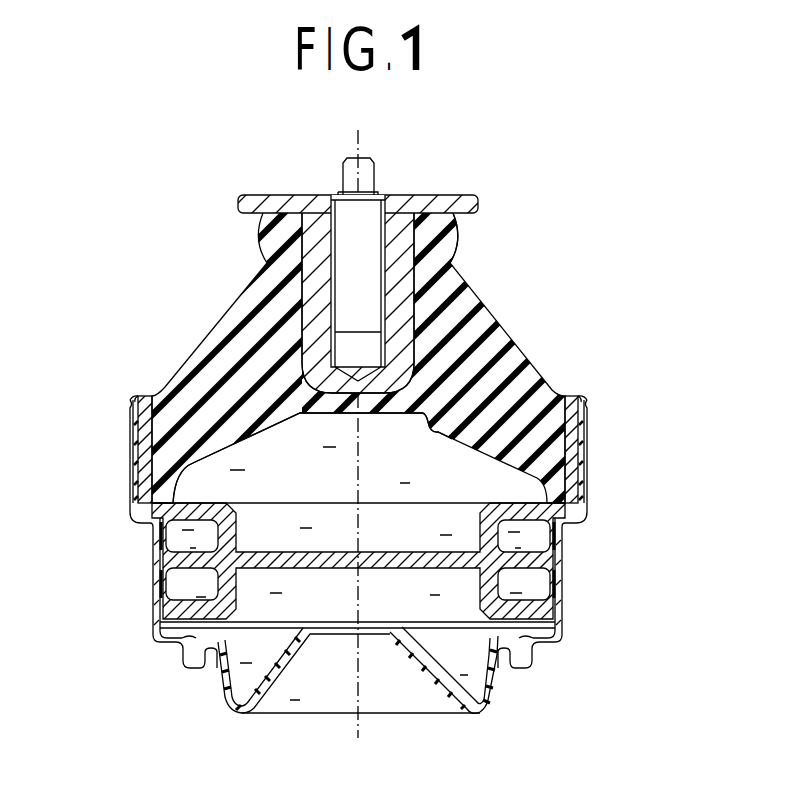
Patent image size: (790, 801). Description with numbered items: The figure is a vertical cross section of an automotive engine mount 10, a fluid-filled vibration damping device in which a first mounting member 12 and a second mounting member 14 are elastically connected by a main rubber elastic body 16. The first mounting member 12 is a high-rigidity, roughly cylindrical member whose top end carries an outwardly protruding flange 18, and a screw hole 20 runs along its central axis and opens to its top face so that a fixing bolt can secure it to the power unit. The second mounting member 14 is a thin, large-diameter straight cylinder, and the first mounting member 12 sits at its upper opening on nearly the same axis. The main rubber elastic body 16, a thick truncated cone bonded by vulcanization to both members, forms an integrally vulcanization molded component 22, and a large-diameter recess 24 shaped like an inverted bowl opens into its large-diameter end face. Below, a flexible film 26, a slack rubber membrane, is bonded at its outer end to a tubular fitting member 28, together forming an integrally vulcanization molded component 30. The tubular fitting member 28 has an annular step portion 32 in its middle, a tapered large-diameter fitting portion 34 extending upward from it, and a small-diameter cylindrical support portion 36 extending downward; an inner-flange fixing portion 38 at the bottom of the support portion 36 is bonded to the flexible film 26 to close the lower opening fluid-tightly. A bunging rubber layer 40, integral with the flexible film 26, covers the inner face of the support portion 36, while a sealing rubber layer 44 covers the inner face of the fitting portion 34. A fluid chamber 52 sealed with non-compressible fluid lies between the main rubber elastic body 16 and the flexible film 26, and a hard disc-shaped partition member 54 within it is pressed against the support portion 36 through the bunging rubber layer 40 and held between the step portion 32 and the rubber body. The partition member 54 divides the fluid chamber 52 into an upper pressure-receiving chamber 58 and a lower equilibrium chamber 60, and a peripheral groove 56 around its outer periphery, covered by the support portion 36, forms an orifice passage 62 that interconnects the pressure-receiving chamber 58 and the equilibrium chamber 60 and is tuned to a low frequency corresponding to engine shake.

The engine mount 10 is at (586, 252).
The first mounting member 12 is at (395, 400).
The second mounting member 14 is at (395, 400).
The main rubber elastic body 16 is at (472, 338).
The flange 18 is at (452, 201).
The screw hole 20 is at (338, 215).
The integrally vulcanization molded component 22 is at (468, 272).
The large-diameter recess 24 is at (445, 432).
The flexible film 26 is at (271, 677).
The tubular fitting member 28 is at (590, 427).
The integrally vulcanization molded component 30 is at (497, 707).
The step portion 32 is at (572, 522).
The fitting portion 34 is at (588, 490).
The support portion 36 is at (561, 615).
The fixing portion 38 is at (541, 643).
The bunging rubber layer 40 is at (553, 591).
The sealing rubber layer 44 is at (582, 460).
The fluid chamber 52 is at (301, 436).
The partition member 54 is at (203, 500).
The peripheral groove 56 is at (187, 546).
The pressure-receiving chamber 58 is at (337, 480).
The equilibrium chamber 60 is at (482, 667).
The orifice passage 62 is at (183, 595).